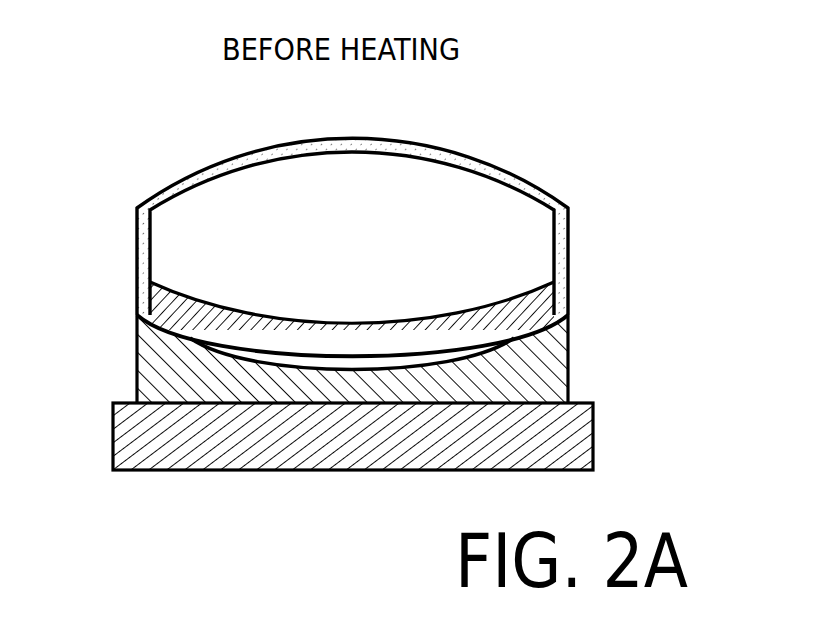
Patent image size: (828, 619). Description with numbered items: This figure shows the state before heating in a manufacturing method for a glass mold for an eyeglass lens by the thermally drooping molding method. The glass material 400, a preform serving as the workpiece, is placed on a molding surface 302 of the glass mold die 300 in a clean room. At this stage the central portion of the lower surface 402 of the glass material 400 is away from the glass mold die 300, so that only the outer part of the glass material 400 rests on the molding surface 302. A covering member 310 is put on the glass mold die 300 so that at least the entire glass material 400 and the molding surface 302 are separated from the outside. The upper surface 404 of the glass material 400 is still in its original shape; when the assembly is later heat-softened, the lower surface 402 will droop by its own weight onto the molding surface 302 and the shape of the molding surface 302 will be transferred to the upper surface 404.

The glass mold die 300 is at (150, 364).
The molding surface 302 is at (440, 360).
The covering member 310 is at (437, 150).
The glass material 400 is at (338, 342).
The lower surface 402 is at (302, 360).
The upper surface 404 is at (250, 272).